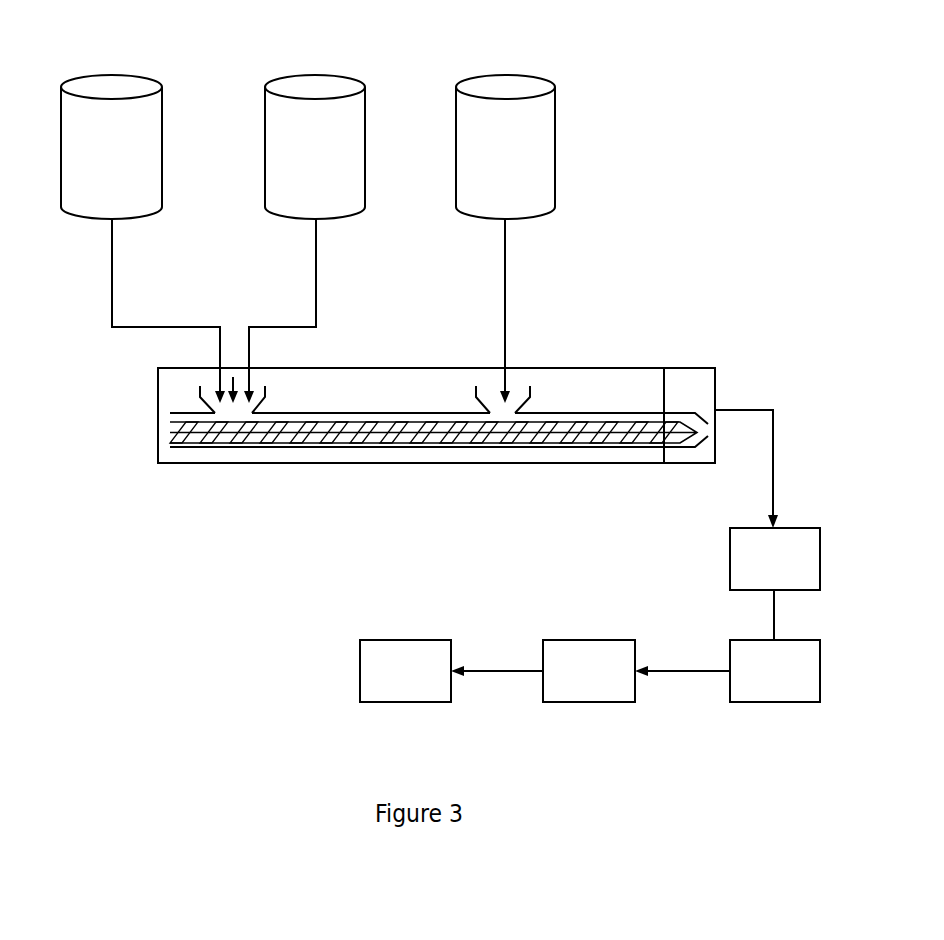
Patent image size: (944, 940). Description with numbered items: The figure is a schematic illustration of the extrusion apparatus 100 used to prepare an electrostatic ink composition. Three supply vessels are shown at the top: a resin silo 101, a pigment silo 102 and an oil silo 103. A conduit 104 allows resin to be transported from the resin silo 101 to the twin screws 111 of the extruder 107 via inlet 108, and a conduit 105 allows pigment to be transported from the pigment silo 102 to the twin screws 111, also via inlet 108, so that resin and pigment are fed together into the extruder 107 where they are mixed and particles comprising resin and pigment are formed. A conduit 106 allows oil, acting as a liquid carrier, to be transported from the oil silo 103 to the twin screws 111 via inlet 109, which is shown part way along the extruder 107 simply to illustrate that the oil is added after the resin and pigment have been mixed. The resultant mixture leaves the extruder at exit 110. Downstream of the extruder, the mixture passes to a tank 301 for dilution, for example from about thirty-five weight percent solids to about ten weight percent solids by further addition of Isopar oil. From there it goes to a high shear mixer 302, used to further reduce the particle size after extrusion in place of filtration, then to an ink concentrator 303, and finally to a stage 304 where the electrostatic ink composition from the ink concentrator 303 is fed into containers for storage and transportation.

The extrusion apparatus 100 is at (94, 420).
The resin silo 101 is at (112, 73).
The pigment silo 102 is at (316, 73).
The oil silo 103 is at (506, 73).
The conduit 104 is at (110, 263).
The conduit 105 is at (313, 263).
The conduit 106 is at (503, 263).
The extruder 107 is at (348, 413).
The inlet 108 is at (200, 388).
The inlet 109 is at (488, 388).
The exit 110 is at (710, 431).
The twin screws 111 is at (633, 425).
The tank 301 is at (730, 543).
The high shear mixer 302 is at (755, 703).
The ink concentrator 303 is at (563, 703).
The stage 304 is at (384, 703).